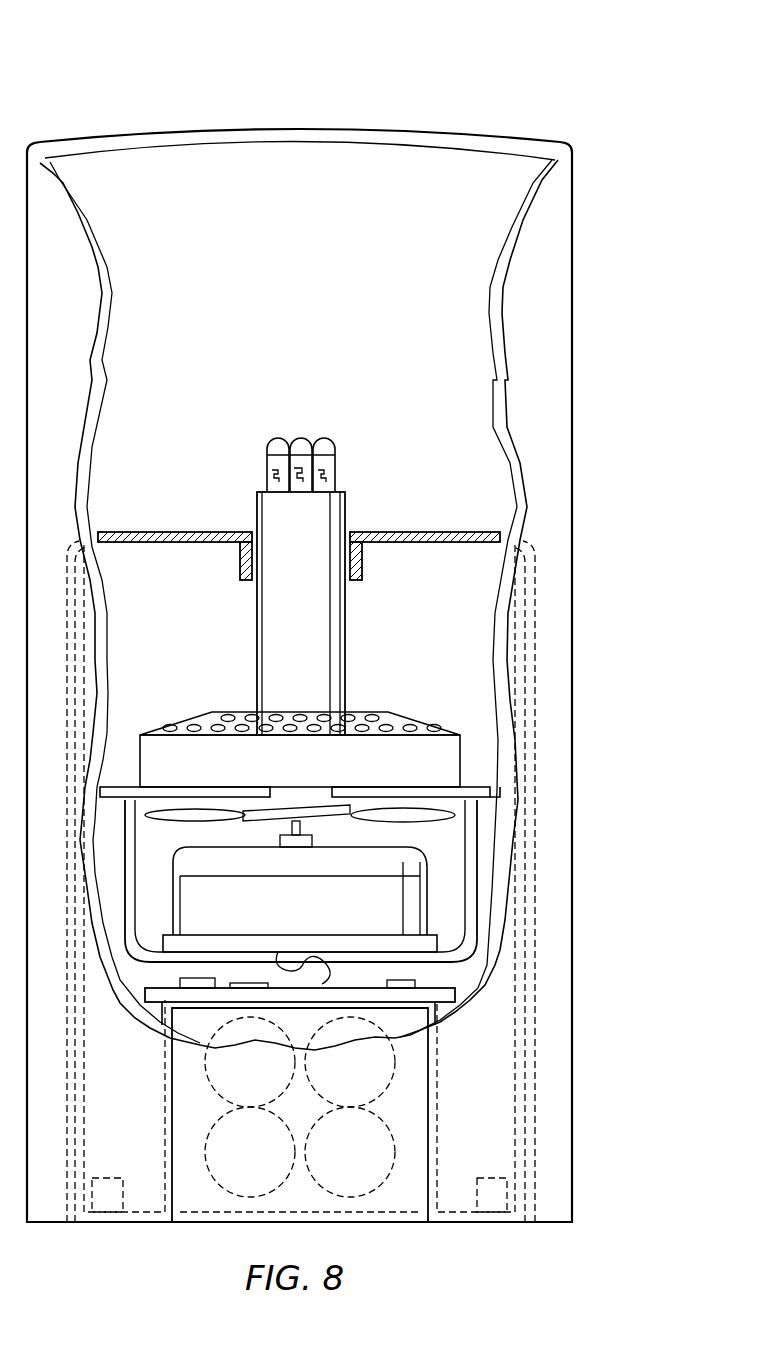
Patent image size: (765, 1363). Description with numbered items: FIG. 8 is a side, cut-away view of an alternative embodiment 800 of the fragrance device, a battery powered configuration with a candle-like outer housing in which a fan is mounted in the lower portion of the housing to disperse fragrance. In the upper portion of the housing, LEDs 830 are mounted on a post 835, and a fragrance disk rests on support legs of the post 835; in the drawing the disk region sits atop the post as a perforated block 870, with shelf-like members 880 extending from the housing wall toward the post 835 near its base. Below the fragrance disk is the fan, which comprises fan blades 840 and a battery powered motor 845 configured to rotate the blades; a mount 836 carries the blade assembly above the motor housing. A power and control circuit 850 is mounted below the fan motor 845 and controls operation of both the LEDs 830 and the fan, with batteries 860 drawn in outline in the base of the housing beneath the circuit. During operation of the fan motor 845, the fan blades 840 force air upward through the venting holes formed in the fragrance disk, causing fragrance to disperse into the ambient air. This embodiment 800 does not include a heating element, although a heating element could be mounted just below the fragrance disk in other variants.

The alternative embodiment 800 is at (120, 64).
The LEDs 830 is at (318, 437).
The post 835 is at (345, 505).
The fan mount plate 836 is at (300, 797).
The fan blades 840 is at (410, 815).
The battery powered motor 845 is at (430, 890).
The power and control circuit 850 is at (455, 993).
The batteries 860 is at (205, 1072).
The perforated diffuser block 870 is at (200, 712).
The shelf 880 is at (138, 531).